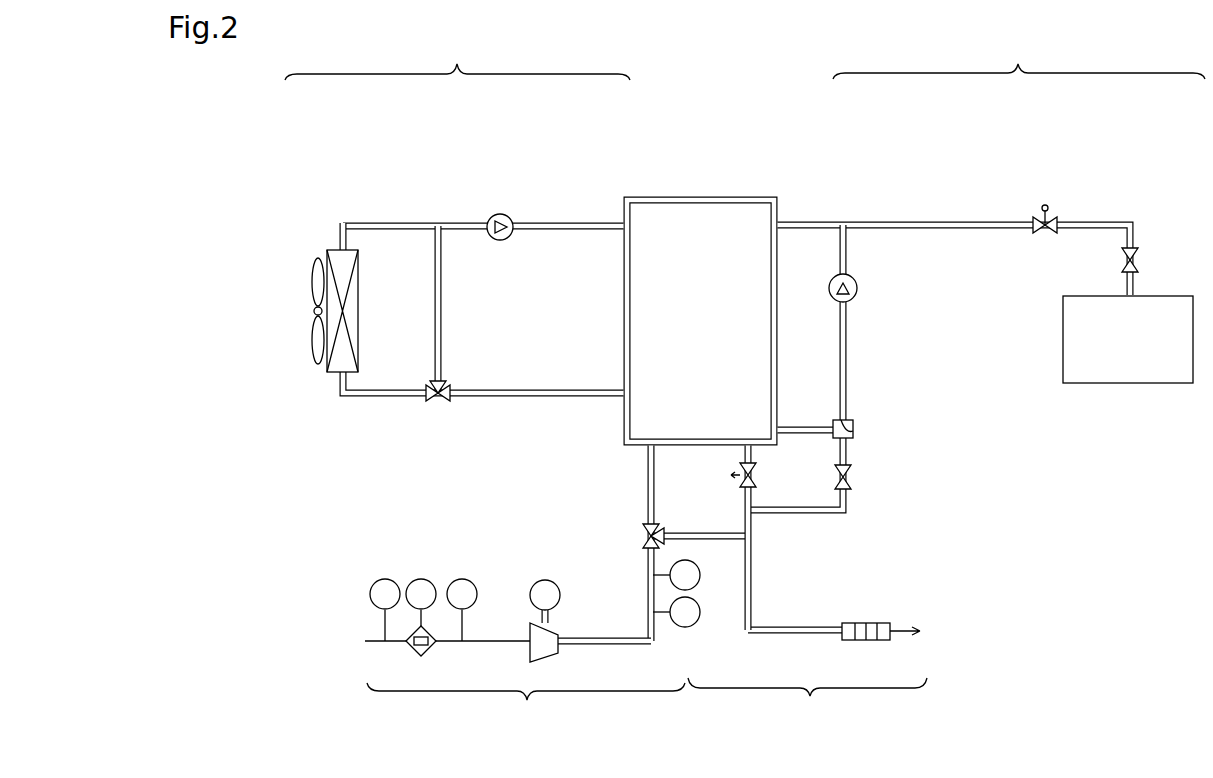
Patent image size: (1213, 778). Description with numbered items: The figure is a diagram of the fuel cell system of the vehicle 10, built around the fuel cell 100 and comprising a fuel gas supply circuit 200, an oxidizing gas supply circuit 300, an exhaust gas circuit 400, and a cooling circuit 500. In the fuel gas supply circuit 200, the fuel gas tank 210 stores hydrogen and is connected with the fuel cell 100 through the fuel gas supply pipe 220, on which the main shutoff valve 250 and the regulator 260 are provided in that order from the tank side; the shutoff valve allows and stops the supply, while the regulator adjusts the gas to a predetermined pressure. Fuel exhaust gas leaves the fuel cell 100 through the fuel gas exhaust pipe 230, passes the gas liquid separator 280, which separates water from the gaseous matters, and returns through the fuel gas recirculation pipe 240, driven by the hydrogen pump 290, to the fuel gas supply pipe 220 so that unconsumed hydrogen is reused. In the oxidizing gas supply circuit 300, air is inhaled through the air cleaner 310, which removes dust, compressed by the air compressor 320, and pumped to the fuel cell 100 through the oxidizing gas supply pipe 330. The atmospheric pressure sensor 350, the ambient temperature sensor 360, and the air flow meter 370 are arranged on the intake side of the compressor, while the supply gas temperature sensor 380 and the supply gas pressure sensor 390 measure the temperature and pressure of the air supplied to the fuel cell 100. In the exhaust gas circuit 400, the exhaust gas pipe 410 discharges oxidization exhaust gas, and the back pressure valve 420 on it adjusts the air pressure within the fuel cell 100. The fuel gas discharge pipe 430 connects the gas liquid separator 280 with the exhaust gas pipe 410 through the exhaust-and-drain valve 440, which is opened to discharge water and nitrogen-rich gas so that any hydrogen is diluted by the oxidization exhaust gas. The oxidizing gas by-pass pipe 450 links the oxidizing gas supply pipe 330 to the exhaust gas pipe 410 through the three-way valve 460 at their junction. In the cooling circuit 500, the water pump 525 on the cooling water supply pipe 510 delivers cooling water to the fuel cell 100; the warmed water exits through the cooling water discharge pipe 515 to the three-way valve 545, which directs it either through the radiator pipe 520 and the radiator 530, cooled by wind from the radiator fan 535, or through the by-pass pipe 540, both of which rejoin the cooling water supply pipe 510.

The vehicle 10 is at (792, 85).
The fuel cell 100 is at (752, 200).
The fuel gas supply circuit 200 is at (1019, 60).
The fuel gas tank 210 is at (1140, 296).
The fuel gas supply pipe 220 is at (912, 221).
The fuel gas exhaust pipe 230 is at (799, 426).
The fuel gas recirculation pipe 240 is at (847, 255).
The main shutoff valve 250 is at (1135, 248).
The regulator 260 is at (1050, 212).
The gas liquid separator 280 is at (853, 431).
The hydrogen pump 290 is at (857, 291).
The oxidizing gas supply circuit 300 is at (526, 708).
The air cleaner 310 is at (405, 648).
The air compressor 320 is at (528, 650).
The oxidizing gas supply pipe 330 is at (656, 628).
The atmospheric pressure sensor 350 is at (380, 579).
The ambient temperature sensor 360 is at (417, 579).
The air flow meter 370 is at (459, 579).
The supply gas temperature sensor 380 is at (703, 610).
The supply gas pressure sensor 390 is at (703, 573).
The exhaust gas circuit 400 is at (807, 703).
The exhaust gas pipe 410 is at (790, 628).
The back pressure valve 420 is at (758, 474).
The fuel gas discharge pipe 430 is at (830, 514).
The exhaust-and-drain valve 440 is at (853, 477).
The oxidizing gas by-pass pipe 450 is at (673, 534).
The three-way valve 460 is at (655, 500).
The cooling circuit 500 is at (457, 59).
The cooling water supply pipe 510 is at (600, 220).
The cooling water discharge pipe 515 is at (507, 388).
The radiator pipe 520 is at (365, 389).
The water pump 525 is at (502, 213).
The radiator 530 is at (360, 291).
The radiator fan 535 is at (316, 258).
The by-pass pipe 540 is at (434, 246).
The three-way valve 545 is at (437, 402).